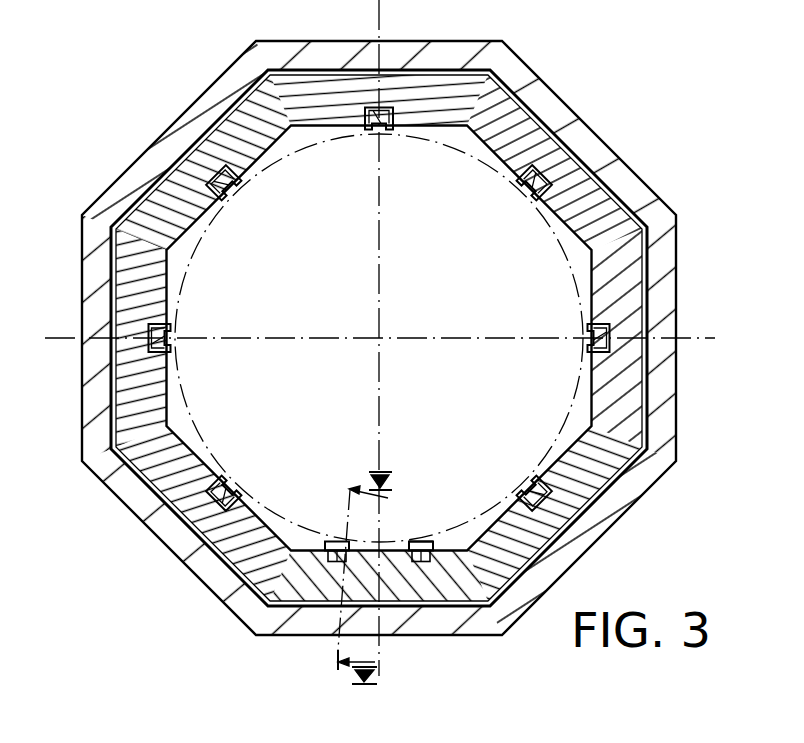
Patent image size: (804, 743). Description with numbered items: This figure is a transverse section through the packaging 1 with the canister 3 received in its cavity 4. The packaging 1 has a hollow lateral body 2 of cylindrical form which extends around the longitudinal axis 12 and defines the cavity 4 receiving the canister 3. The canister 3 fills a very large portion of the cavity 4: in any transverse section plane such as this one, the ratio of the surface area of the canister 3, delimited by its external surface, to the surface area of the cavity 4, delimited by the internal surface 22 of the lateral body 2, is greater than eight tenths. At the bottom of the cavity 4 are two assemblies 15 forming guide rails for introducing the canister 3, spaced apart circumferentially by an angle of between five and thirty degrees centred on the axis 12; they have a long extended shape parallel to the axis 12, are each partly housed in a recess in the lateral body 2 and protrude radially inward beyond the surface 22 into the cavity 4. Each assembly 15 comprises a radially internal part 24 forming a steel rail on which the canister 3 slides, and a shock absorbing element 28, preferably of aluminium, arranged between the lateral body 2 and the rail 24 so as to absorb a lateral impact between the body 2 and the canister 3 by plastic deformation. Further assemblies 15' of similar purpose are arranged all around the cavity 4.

The packaging 1 is at (605, 61).
The lateral body 2 is at (597, 128).
The canister 3 is at (432, 140).
The cavity 4 is at (505, 122).
The longitudinal axis 12 is at (380, 337).
The assembly forming guide rail 15 is at (349, 609).
The assembly forming guide rail 15' is at (382, 256).
The internal surface 22 is at (205, 238).
The radially internal part forming a rail 24 is at (412, 545).
The shock absorbing element 28 is at (464, 565).